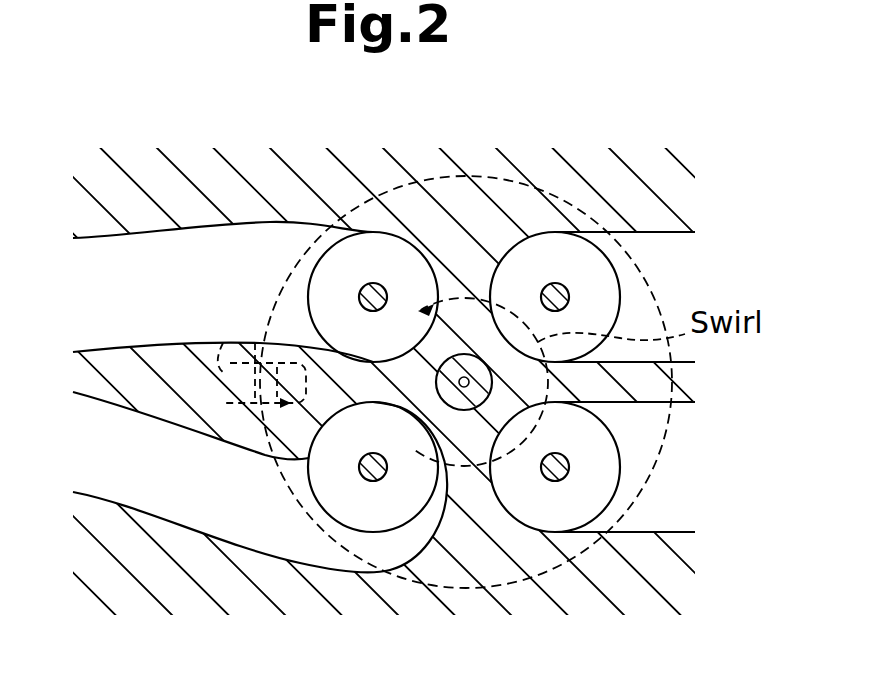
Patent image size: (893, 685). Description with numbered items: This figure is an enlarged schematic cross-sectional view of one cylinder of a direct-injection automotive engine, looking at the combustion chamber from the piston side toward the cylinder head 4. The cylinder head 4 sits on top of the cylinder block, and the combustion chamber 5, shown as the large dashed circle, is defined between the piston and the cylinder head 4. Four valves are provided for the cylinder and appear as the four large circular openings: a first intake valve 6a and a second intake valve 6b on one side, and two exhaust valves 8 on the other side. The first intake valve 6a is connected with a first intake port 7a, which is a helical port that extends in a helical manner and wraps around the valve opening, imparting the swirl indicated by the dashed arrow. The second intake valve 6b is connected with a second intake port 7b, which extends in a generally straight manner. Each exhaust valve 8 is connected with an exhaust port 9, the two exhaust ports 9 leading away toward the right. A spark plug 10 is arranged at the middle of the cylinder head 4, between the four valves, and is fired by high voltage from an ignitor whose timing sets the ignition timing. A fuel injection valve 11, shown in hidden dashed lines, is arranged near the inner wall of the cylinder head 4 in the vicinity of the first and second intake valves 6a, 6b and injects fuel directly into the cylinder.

The cylinder head 4 is at (652, 172).
The combustion chamber 5 is at (459, 177).
The first intake valve 6a is at (384, 512).
The second intake valve 6b is at (392, 245).
The first intake port 7a is at (230, 530).
The second intake port 7b is at (205, 243).
The exhaust valve 8 is at (547, 243).
The exhaust port 9 is at (646, 233).
The spark plug 10 is at (478, 356).
The fuel injection valve 11 is at (223, 343).